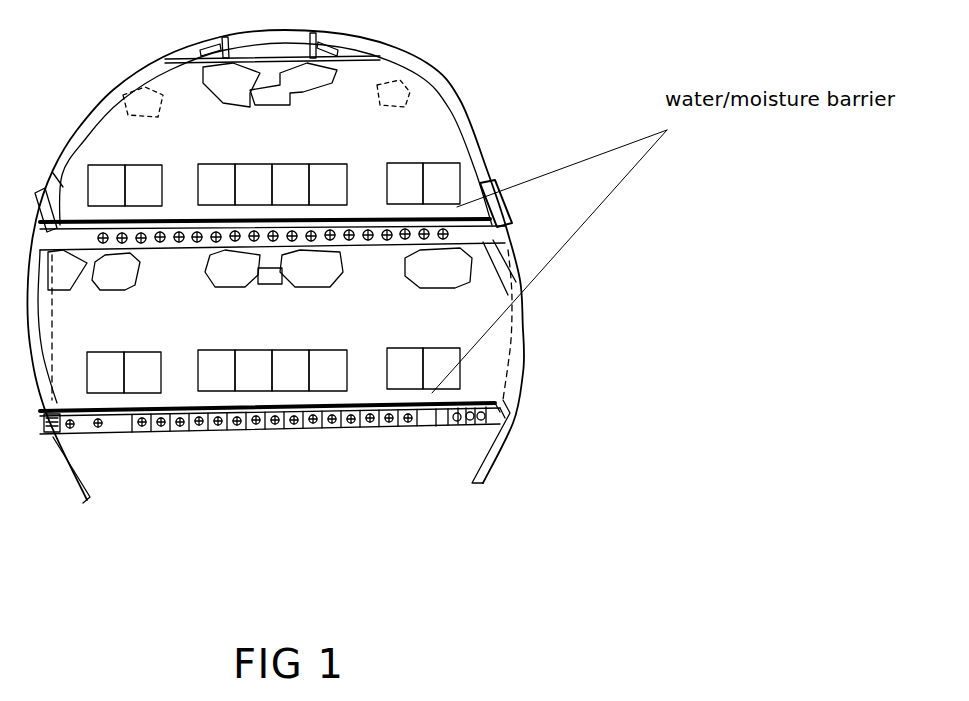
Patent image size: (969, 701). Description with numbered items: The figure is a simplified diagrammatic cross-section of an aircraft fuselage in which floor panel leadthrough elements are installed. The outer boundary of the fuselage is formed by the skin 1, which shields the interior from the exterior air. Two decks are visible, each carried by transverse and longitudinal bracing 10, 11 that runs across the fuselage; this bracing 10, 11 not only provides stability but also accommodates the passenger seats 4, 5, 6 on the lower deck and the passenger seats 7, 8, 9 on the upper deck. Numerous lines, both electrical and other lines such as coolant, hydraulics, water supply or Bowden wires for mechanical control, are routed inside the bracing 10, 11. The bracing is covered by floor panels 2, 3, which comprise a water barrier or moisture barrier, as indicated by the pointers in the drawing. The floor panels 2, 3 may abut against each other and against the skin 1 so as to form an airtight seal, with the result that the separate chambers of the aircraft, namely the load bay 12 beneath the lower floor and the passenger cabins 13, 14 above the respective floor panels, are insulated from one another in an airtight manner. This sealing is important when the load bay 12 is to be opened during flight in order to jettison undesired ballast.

The skin 1 is at (520, 327).
The floor panel 2 is at (417, 407).
The floor panel 3 is at (422, 215).
The passenger seat 4 is at (107, 375).
The passenger seat 5 is at (257, 375).
The passenger seat 6 is at (407, 373).
The passenger seat 7 is at (123, 178).
The passenger seat 8 is at (253, 180).
The passenger seat 9 is at (407, 163).
The transverse and longitudinal bracing 10 is at (443, 417).
The transverse and longitudinal bracing 11 is at (478, 233).
The load bay 12 is at (467, 443).
The passenger cabin 13 is at (473, 307).
The passenger cabin 14 is at (290, 90).